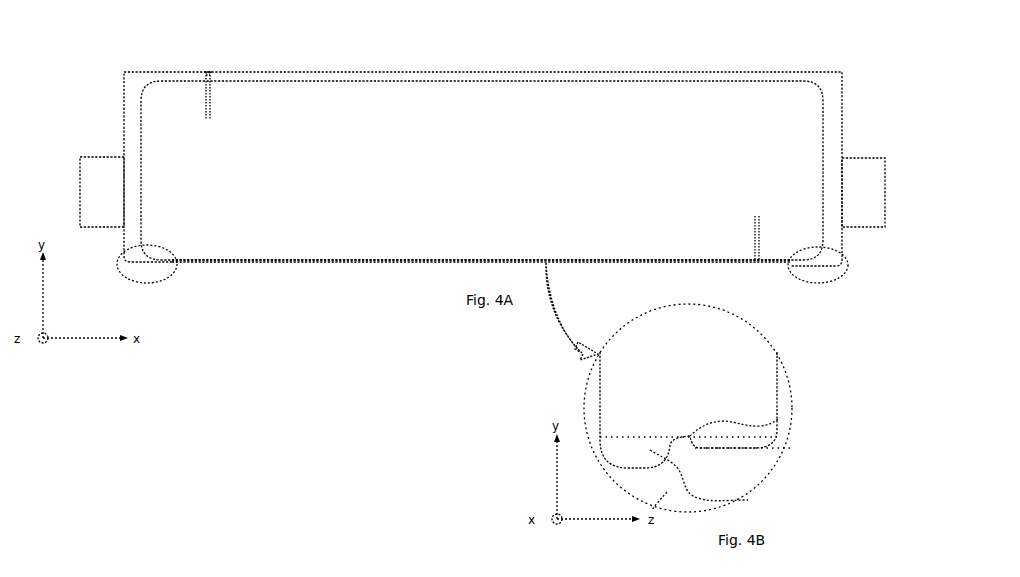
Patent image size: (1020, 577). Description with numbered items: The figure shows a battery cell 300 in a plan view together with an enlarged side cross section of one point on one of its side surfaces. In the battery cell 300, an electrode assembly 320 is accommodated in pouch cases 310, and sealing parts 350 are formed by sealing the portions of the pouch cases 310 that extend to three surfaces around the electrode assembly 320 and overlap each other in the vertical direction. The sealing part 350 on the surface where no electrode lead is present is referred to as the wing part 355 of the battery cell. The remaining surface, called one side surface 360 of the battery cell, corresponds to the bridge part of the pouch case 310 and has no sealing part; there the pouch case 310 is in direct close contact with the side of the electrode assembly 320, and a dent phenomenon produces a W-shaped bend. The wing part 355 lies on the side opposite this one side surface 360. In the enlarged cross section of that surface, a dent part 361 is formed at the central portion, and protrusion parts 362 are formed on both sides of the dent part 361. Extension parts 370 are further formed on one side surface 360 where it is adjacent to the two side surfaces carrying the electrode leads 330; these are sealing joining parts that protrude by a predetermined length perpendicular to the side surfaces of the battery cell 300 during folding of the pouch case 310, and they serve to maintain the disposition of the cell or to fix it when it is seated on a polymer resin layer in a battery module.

In FIG. 4A, the battery cell 300 is at (106, 51).
In FIG. 4A, the pouch case 310 is at (840, 232).
In FIG. 4A, the electrode assembly 320 is at (338, 217).
In FIG. 4A, the electrode lead 330 is at (108, 228).
In FIG. 4A, the sealing part 350 is at (125, 133).
In FIG. 4A, the wing part 355 is at (208, 73).
In FIG. 4A, the one side surface of the battery cell 360 is at (466, 275).
In FIG. 4B, the dent part 361 is at (776, 425).
In FIG. 4B, the protrusion part 362 is at (708, 497).
In FIG. 4A, the extension part 370 is at (172, 284).